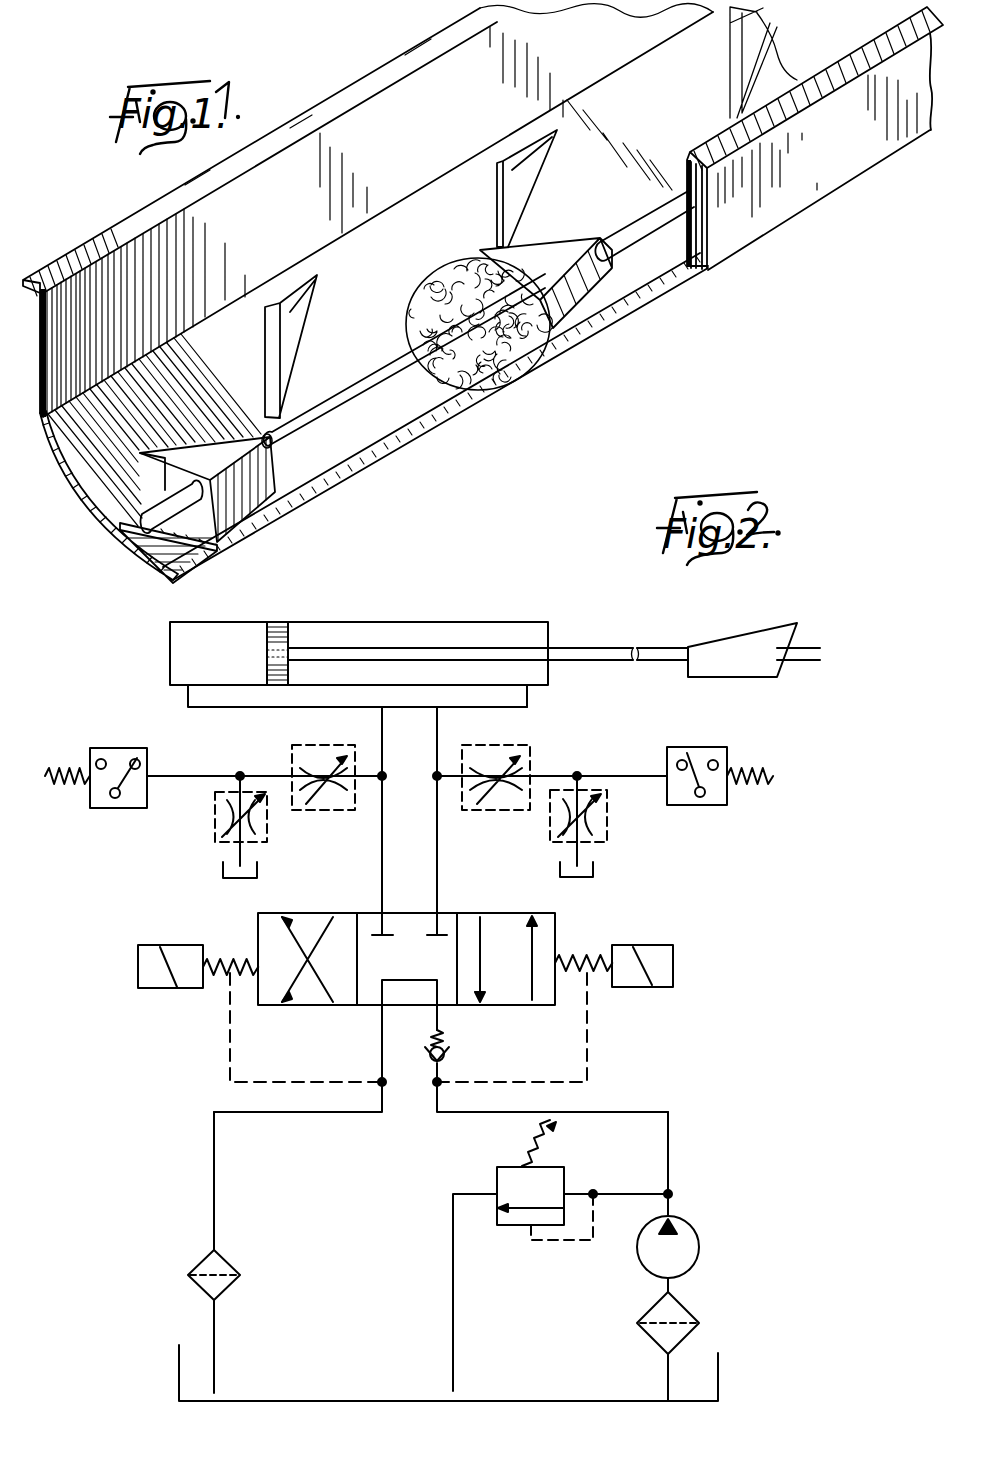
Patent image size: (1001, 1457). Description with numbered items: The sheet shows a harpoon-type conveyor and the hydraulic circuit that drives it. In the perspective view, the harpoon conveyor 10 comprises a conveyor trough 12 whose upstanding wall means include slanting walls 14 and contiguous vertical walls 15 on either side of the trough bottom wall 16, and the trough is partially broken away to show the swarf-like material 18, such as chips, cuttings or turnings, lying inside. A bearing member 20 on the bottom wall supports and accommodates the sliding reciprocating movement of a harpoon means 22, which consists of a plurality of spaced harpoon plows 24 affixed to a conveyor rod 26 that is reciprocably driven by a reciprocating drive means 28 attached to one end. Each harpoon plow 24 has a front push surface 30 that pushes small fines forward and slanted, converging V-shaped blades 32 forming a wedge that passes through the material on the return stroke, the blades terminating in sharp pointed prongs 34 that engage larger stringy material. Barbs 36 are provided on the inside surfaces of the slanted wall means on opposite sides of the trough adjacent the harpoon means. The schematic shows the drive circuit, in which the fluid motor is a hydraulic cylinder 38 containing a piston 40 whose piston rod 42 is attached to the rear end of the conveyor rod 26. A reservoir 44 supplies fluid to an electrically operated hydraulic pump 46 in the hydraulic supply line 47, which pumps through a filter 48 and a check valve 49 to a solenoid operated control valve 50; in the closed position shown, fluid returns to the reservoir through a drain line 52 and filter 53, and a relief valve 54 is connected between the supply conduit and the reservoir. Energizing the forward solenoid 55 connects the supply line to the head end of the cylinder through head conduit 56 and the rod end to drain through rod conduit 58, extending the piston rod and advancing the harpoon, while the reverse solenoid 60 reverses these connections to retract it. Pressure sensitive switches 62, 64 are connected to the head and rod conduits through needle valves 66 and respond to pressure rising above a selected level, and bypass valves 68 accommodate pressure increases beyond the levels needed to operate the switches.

In FIG. 1, the harpoon conveyor 10 is at (483, 293).
In FIG. 1, the conveyor trough 12 is at (797, 60).
In FIG. 1, the slanting walls 14 is at (80, 480).
In FIG. 1, the vertical walls 15 is at (107, 280).
In FIG. 1, the trough bottom wall 16 is at (642, 297).
In FIG. 1, the swarf-like material 18 is at (448, 270).
In FIG. 1, the bearing member 20 is at (600, 310).
In FIG. 1, the harpoon means 22 is at (281, 410).
In FIG. 1, the harpoon plows 24 is at (549, 248).
In FIG. 2, the harpoon plows 24 is at (738, 664).
In FIG. 1, the conveyor rod 26 is at (346, 413).
In FIG. 2, the conveyor rod 26 is at (800, 662).
In FIG. 2, the reciprocating drive means 28 is at (399, 626).
In FIG. 1, the front push surface 30 is at (166, 482).
In FIG. 1, the V-shaped blades 32 is at (265, 476).
In FIG. 1, the pointed prongs 34 is at (149, 455).
In FIG. 1, the barbs 36 is at (512, 165).
In FIG. 2, the hydraulic cylinder 38 is at (170, 635).
In FIG. 2, the piston 40 is at (278, 627).
In FIG. 2, the piston rod 42 is at (485, 648).
In FIG. 2, the reservoir 44 is at (222, 875).
In FIG. 2, the hydraulic pump 46 is at (698, 1236).
In FIG. 2, the hydraulic supply line 47 is at (668, 1140).
In FIG. 2, the filter 48 is at (676, 1310).
In FIG. 2, the check valve 49 is at (447, 1050).
In FIG. 2, the control valve 50 is at (552, 920).
In FIG. 2, the drain line 52 is at (214, 1160).
In FIG. 2, the filter 53 is at (222, 1266).
In FIG. 2, the relief valve 54 is at (497, 1180).
In FIG. 2, the forward solenoid 55 is at (138, 968).
In FIG. 2, the head conduit 56 is at (188, 696).
In FIG. 2, the rod conduit 58 is at (527, 700).
In FIG. 2, the reverse solenoid 60 is at (673, 965).
In FIG. 2, the pressure sensitive switch 62 is at (98, 748).
In FIG. 2, the pressure sensitive switch 64 is at (722, 757).
In FIG. 2, the needle valves 66 is at (302, 745).
In FIG. 2, the bypass valves 68 is at (268, 838).